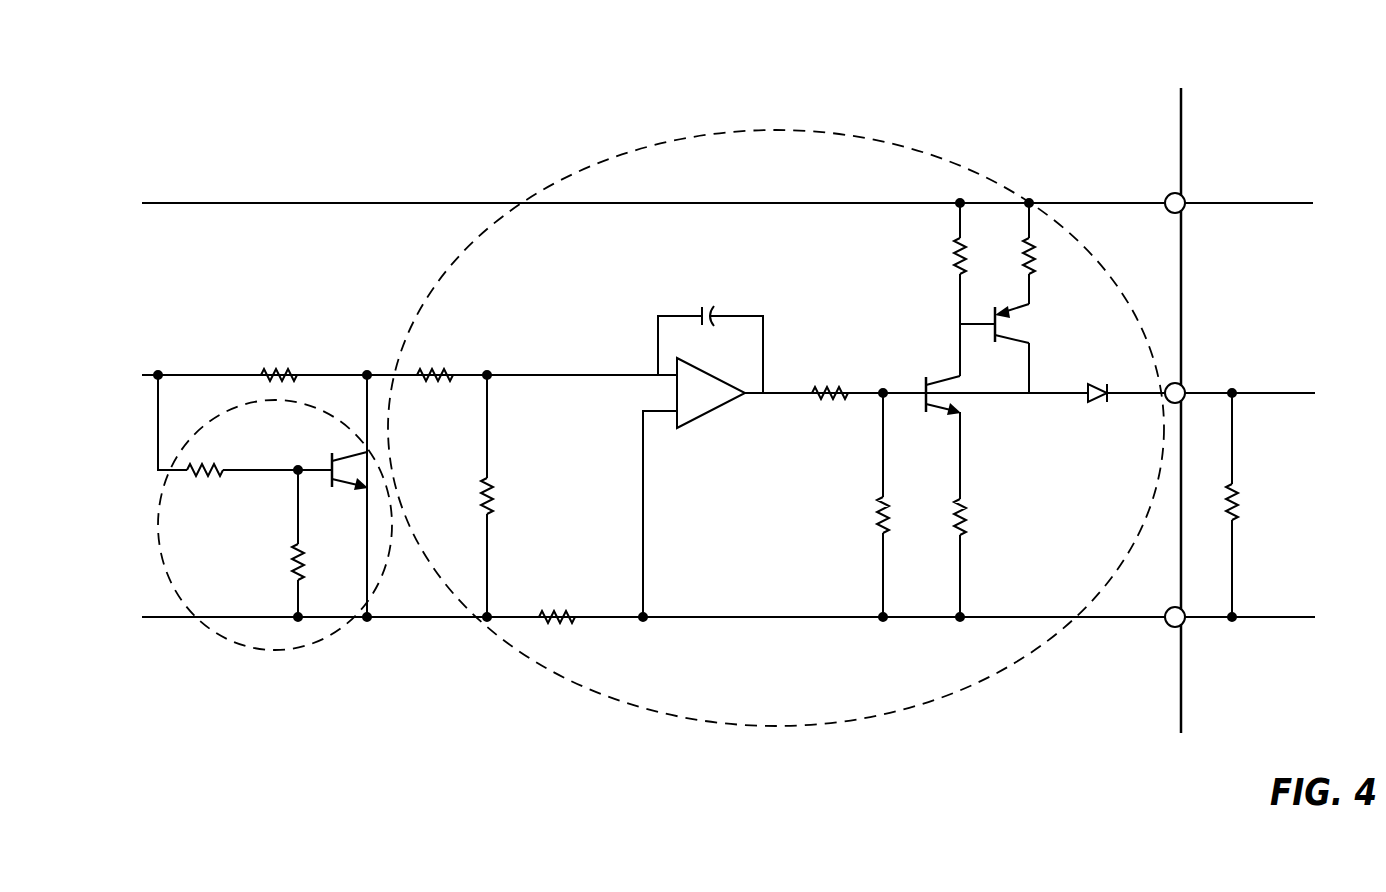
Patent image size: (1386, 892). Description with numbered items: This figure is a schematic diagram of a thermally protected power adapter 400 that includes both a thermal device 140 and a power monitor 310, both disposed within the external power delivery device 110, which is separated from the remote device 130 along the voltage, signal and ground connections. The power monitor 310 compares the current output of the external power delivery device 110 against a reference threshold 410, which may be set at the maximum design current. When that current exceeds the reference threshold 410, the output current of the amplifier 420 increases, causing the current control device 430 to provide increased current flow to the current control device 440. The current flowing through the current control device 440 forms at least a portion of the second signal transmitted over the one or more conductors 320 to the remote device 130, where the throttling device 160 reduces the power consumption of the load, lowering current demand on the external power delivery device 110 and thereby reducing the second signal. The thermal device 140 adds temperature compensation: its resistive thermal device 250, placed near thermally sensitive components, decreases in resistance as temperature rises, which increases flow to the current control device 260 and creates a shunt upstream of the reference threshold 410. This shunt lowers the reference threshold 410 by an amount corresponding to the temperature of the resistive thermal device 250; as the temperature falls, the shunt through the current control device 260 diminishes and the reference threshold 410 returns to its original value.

The thermally protected power adapter 400 is at (226, 128).
The external power delivery device 110 is at (1079, 403).
The remote device 130 is at (1261, 360).
The throttling device 160 is at (1295, 505).
The thermal device 140 is at (282, 528).
The resistive thermal device 250 is at (242, 488).
The current control device 260 is at (333, 482).
The power monitor 310 is at (776, 428).
The conductors 320 is at (1140, 395).
The reference threshold 410 is at (462, 360).
The amplifier 420 is at (735, 369).
The current control device 430 is at (907, 445).
The current control device 440 is at (1019, 333).